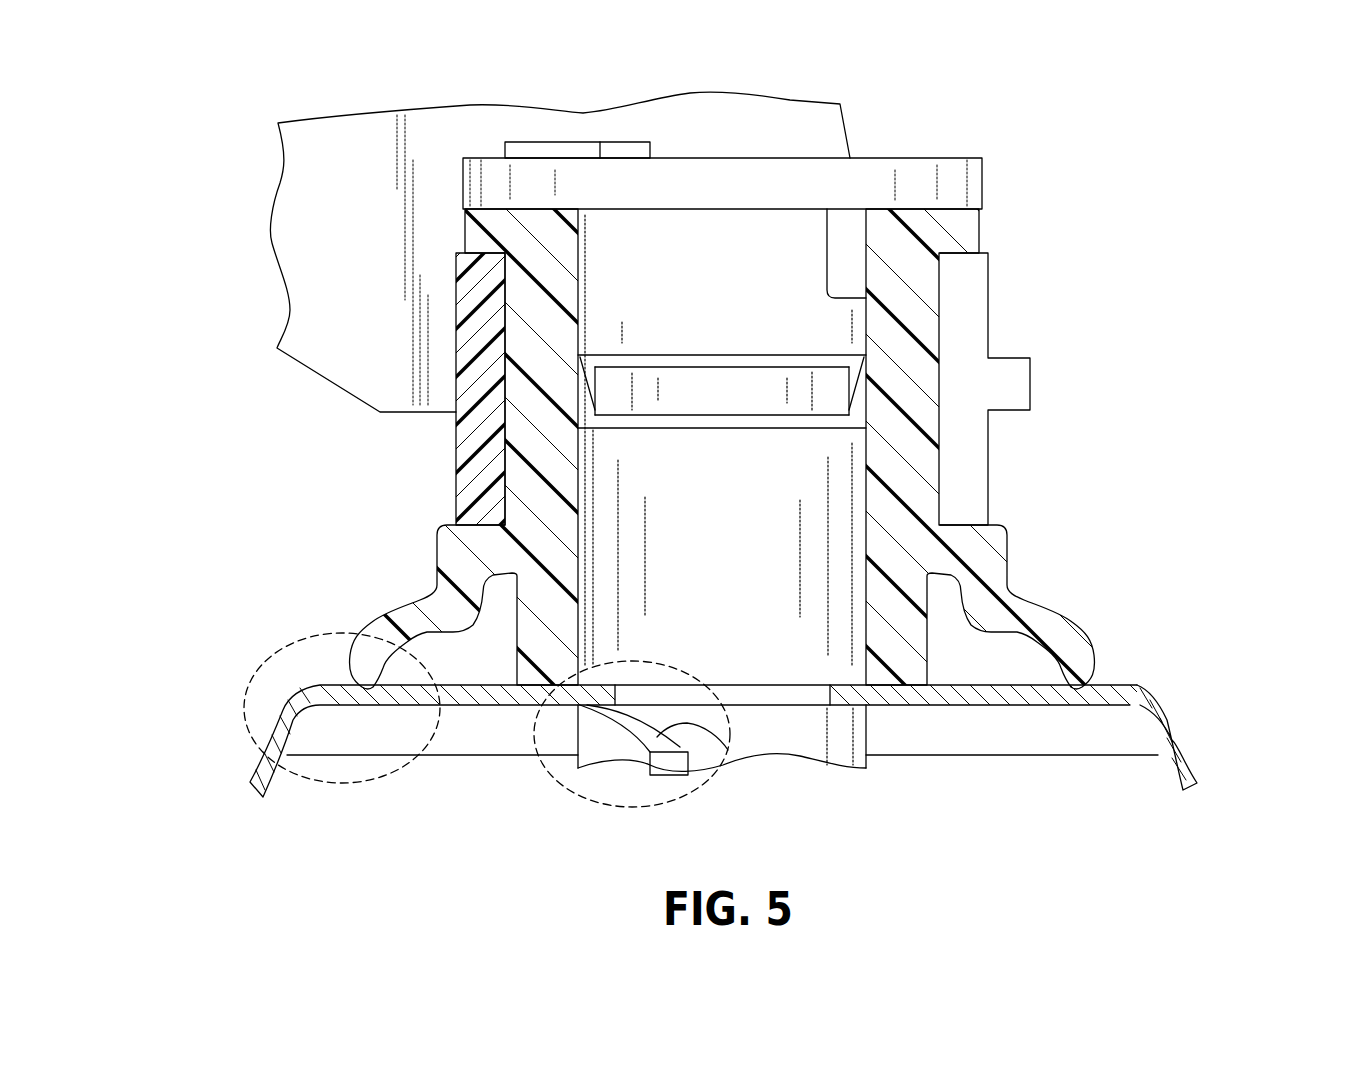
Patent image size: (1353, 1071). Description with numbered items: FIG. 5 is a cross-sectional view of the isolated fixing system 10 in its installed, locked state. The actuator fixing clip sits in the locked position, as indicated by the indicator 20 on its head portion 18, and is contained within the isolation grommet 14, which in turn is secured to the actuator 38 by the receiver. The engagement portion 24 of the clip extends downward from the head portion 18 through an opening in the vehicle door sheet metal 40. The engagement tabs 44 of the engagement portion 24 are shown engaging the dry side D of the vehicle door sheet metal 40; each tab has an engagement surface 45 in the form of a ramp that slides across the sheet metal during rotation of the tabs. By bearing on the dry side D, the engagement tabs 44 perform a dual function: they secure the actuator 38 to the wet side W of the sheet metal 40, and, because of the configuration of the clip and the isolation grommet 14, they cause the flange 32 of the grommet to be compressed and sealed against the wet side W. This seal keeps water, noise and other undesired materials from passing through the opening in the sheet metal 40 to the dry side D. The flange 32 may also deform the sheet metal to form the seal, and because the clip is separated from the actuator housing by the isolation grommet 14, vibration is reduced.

The isolated fixing system 10 is at (1068, 239).
The isolation grommet 14 is at (527, 487).
The head portion 18 is at (912, 180).
The indicator 20 is at (550, 150).
The engagement portion 24 is at (843, 537).
The flange 32 is at (273, 658).
The actuator 38 is at (300, 238).
The vehicle door sheet metal 40 is at (1170, 717).
The engagement tabs 44 is at (557, 778).
The engagement surface 45 is at (730, 750).
The wet side W is at (1126, 684).
The dry side D is at (978, 756).